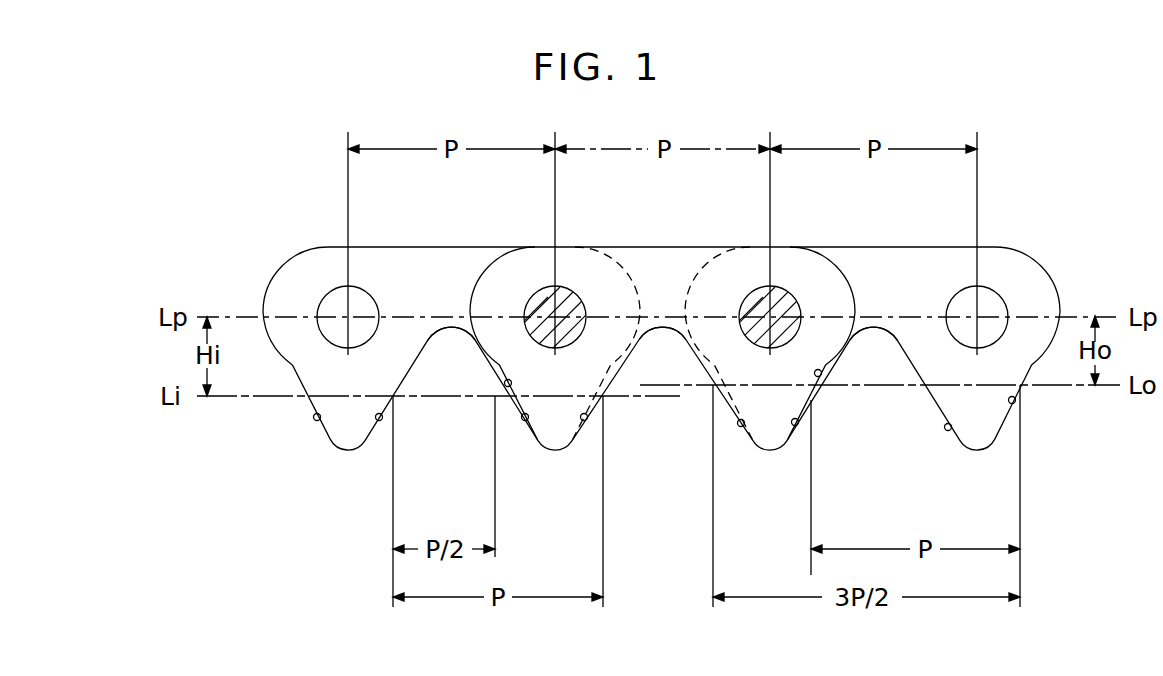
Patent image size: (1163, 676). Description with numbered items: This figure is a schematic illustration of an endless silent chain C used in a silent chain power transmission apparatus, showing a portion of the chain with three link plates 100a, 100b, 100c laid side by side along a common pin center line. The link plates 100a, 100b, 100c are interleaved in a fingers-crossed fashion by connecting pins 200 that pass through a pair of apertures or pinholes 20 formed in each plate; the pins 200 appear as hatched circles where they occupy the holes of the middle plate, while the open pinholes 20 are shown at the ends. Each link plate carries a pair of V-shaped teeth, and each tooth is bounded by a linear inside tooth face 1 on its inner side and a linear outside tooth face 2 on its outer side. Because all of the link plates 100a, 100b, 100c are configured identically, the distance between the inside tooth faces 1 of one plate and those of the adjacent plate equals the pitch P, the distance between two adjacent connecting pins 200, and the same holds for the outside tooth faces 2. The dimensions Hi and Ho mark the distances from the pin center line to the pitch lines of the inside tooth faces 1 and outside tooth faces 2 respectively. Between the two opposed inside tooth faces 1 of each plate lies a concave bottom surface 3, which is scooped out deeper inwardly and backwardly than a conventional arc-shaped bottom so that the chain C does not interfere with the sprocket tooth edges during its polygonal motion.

The inside tooth face 1 is at (382, 420).
The outside tooth face 2 is at (314, 419).
The concave bottom surface 3 is at (449, 329).
The aperture or pinhole 20 is at (324, 298).
The link plate 100a is at (430, 247).
The link plate 100b is at (690, 260).
The link plate 100c is at (912, 247).
The connecting pin 200 is at (576, 296).
The silent chain C is at (1012, 247).